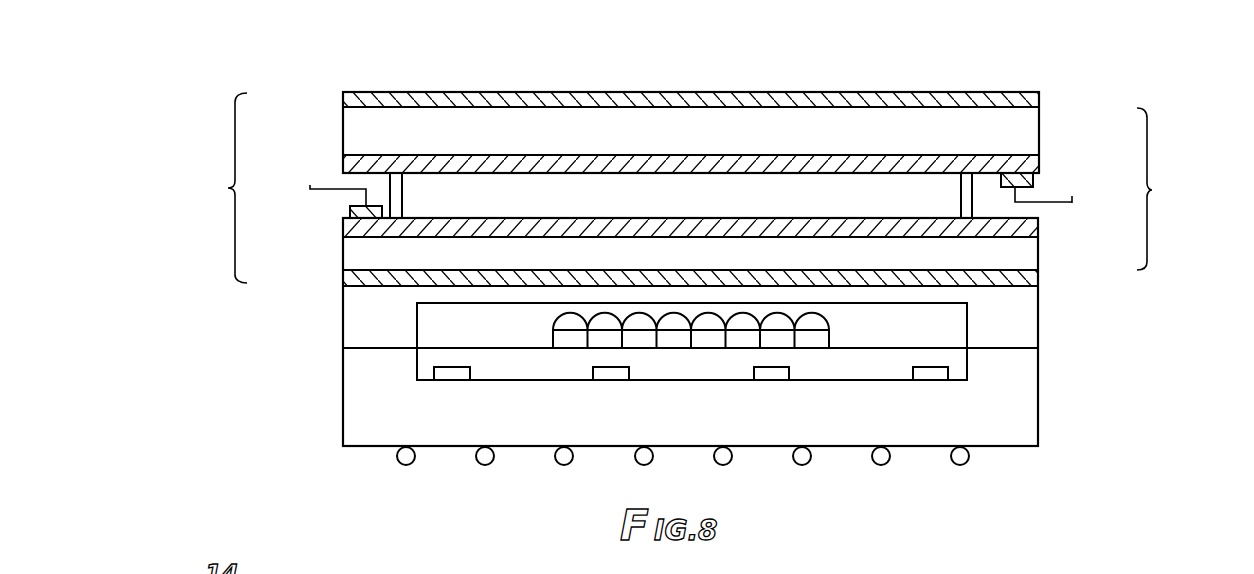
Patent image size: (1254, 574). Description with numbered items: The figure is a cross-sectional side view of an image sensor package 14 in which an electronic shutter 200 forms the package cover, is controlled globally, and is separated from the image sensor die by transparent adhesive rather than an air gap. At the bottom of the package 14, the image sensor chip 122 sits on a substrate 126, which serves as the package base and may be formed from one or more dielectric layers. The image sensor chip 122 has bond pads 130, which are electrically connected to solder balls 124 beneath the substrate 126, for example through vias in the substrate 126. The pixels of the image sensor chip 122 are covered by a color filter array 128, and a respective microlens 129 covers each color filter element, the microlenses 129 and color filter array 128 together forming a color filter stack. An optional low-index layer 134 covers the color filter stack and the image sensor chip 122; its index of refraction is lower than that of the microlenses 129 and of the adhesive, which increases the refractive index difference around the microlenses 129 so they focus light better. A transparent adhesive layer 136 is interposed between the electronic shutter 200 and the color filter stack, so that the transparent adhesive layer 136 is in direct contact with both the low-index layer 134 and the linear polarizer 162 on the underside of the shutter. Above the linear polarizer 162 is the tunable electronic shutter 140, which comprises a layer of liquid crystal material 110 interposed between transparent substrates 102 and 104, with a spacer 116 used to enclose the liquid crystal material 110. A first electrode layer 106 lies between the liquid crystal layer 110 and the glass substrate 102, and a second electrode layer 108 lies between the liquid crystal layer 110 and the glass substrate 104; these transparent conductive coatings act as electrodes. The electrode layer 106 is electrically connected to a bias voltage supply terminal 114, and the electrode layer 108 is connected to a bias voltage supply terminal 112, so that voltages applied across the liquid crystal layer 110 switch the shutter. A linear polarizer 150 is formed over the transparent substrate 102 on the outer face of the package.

The image sensor package 14 is at (166, 88).
The electronic shutter 200 is at (228, 188).
The transparent substrate 102 is at (739, 107).
The linear polarizer 150 is at (965, 100).
The first electrode layer 106 is at (1040, 163).
The liquid crystal layer 110 is at (628, 187).
The spacer 116 is at (398, 178).
The bias voltage supply terminal 114 is at (1032, 177).
The bias voltage supply terminal 112 is at (352, 212).
The transparent substrate 104 is at (644, 332).
The second electrode layer 108 is at (345, 229).
The linear polarizer 162 is at (360, 253).
The tunable electronic shutter 140 is at (1152, 190).
The image sensor chip 122 is at (1012, 411).
The substrate 126 is at (378, 410).
The low-index layer 134 is at (1000, 304).
The transparent adhesive layer 136 is at (1000, 325).
The color filter array 128 is at (846, 332).
The microlenses 129 is at (540, 321).
The bond pads 130 is at (912, 376).
The solder balls 124 is at (410, 457).